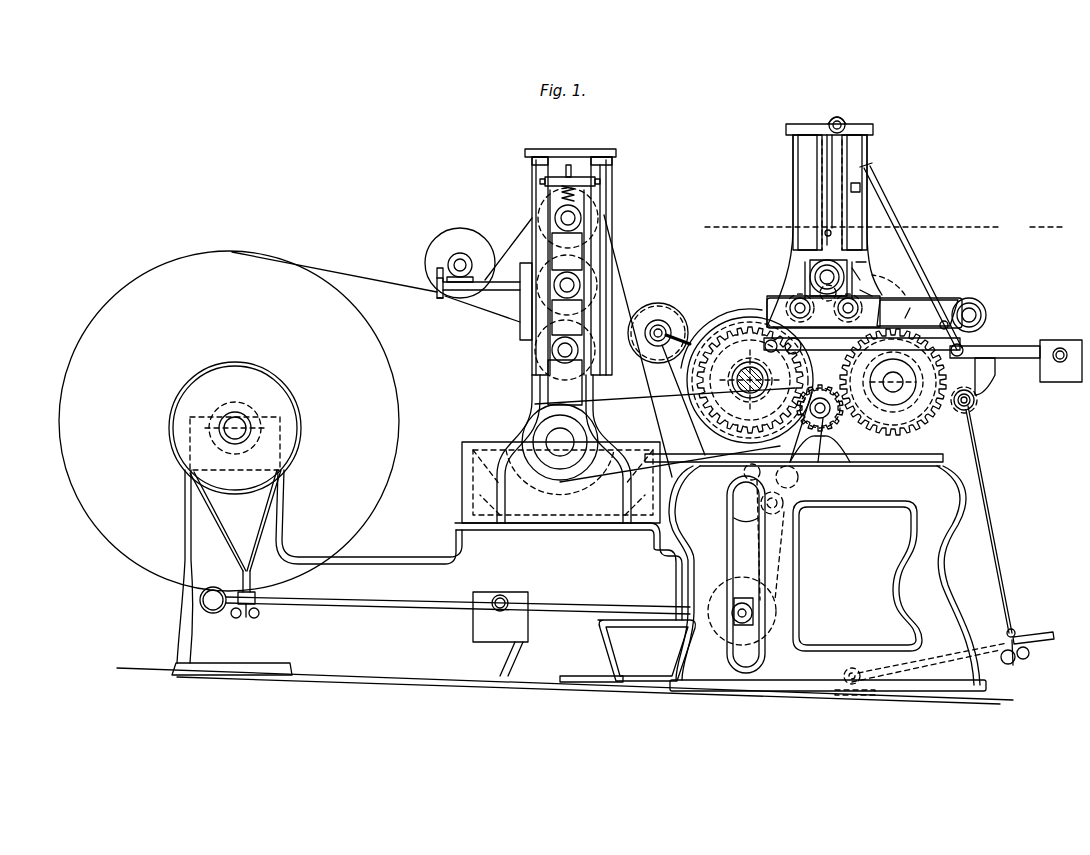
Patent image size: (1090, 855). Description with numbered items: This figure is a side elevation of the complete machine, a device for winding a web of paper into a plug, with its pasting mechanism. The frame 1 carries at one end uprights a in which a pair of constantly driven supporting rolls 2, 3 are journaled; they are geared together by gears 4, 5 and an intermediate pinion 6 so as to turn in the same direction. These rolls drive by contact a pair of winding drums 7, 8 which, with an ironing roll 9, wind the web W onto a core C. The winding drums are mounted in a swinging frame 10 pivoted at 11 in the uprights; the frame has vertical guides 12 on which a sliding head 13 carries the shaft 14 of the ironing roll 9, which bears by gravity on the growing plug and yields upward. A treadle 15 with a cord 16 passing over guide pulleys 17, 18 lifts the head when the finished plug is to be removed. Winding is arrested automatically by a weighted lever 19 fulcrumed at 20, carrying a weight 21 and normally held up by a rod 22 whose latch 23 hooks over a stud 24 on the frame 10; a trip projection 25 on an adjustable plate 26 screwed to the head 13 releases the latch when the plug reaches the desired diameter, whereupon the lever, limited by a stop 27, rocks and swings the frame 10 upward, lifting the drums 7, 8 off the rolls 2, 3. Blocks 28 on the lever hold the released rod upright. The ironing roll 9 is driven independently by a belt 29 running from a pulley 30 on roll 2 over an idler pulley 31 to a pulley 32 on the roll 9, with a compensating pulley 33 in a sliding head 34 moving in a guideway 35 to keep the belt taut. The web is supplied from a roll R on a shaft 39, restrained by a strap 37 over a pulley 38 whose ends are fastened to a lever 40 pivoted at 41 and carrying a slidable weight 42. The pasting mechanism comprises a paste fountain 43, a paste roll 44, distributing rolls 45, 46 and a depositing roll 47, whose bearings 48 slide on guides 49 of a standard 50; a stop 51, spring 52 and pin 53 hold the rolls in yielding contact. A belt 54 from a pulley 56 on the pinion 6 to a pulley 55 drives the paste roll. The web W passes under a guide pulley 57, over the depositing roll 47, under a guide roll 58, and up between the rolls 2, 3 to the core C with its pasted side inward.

The frame 1 is at (909, 473).
The supporting roll 2 is at (722, 327).
The supporting roll 3 is at (893, 300).
The gear 4 is at (750, 380).
The gear 5 is at (893, 382).
The intermediate pinion 6 is at (820, 423).
The winding drum 7 is at (795, 294).
The winding drum 8 is at (862, 294).
The ironing roll 9 is at (867, 253).
The swinging frame 10 is at (803, 223).
The pivot 11 is at (986, 316).
The vertical guides 12 is at (816, 178).
The sliding head 13 is at (810, 275).
The shaft 14 is at (852, 273).
The treadle 15 is at (1006, 640).
The cord 16 is at (830, 168).
The guide pulley 17 is at (970, 421).
The guide pulley 18 is at (840, 117).
The weighted lever 19 is at (1012, 350).
The fulcrum 20 is at (796, 352).
The weight 21 is at (1062, 347).
The rod 22 is at (897, 238).
The latch 23 is at (862, 185).
The stud 24 is at (860, 181).
The trip projection 25 is at (848, 256).
The plate 26 is at (938, 292).
The stop 27 is at (995, 378).
The blocks 28 is at (986, 340).
The belt 29 is at (660, 445).
The pulley 30 is at (755, 326).
The idler pulley 31 is at (666, 308).
The pulley 32 is at (820, 262).
The compensating pulley 33 is at (748, 582).
The sliding head 34 is at (742, 611).
The guideway 35 is at (727, 558).
The strap 37 is at (262, 541).
The pulley 38 is at (235, 428).
The shaft 39 is at (235, 436).
The lever 40 is at (458, 596).
The pivot 41 is at (213, 596).
The weight 42 is at (548, 637).
The paste fountain 43 is at (462, 478).
The paste roll 44 is at (498, 428).
The distributing roll 45 is at (532, 363).
The distributing roll 46 is at (550, 258).
The depositing roll 47 is at (601, 205).
The bearings 48 is at (555, 218).
The guides 49 is at (560, 196).
The standard 50 is at (545, 388).
The stop 51 is at (600, 182).
The spring 52 is at (545, 182).
The pin 53 is at (570, 165).
The belt 54 is at (665, 393).
The pulley 55 is at (562, 482).
The pulley 56 is at (843, 409).
The guide pulley 57 is at (452, 241).
The guide roll 58 is at (800, 520).
The roll of paper R is at (229, 421).
The web W is at (405, 291).
The core C is at (902, 311).
The uprights a is at (963, 415).